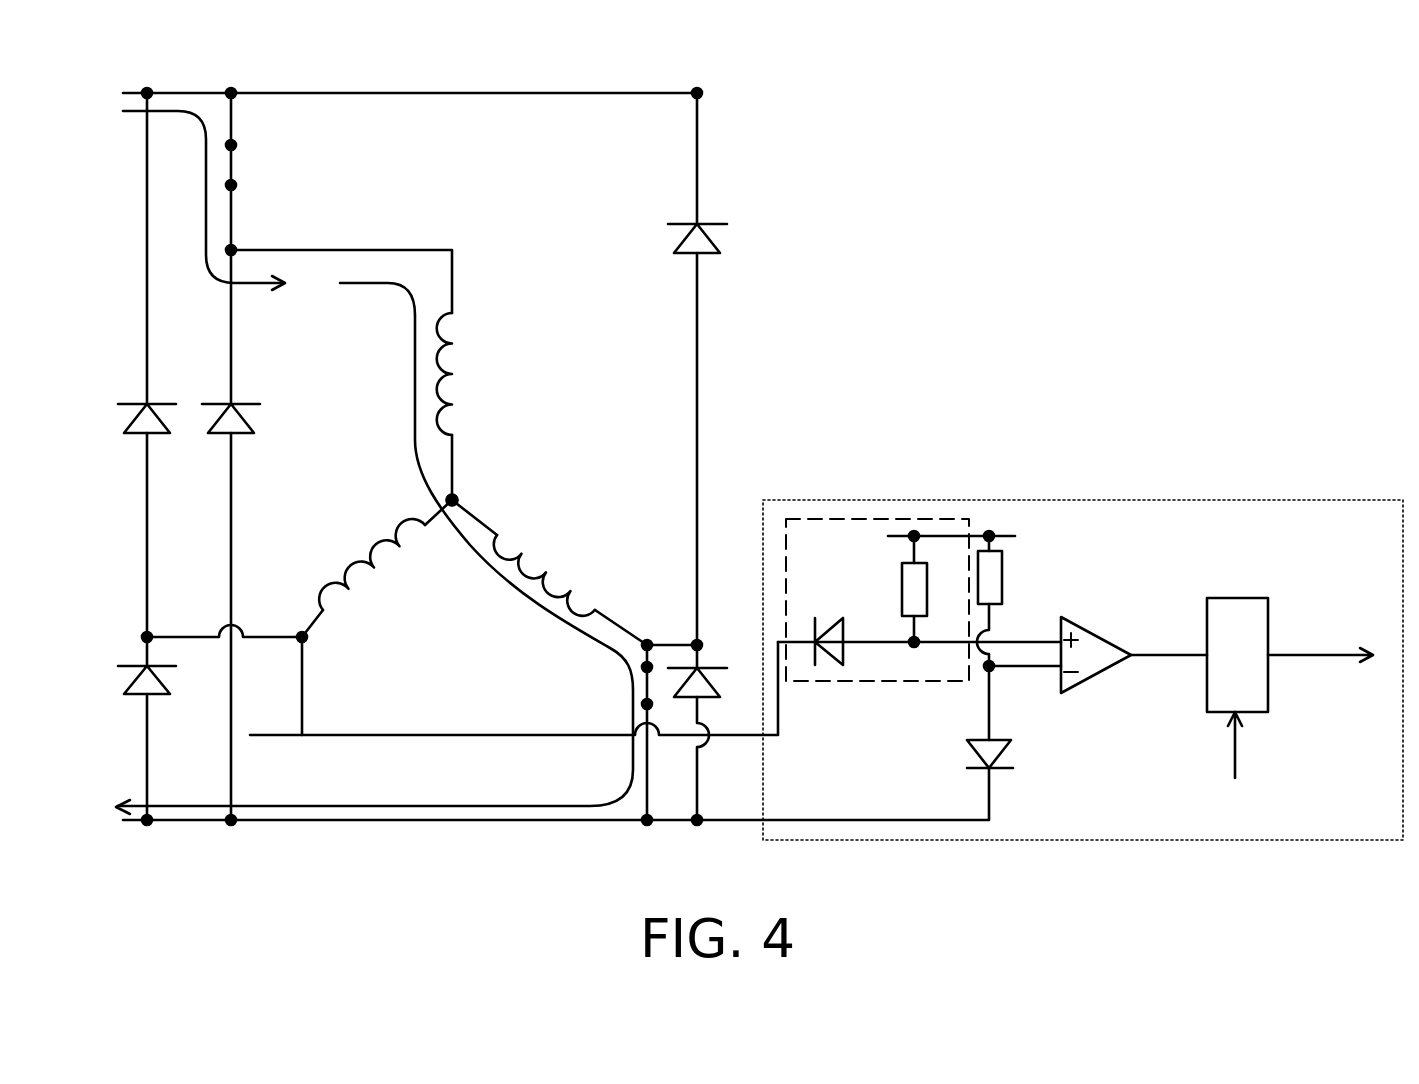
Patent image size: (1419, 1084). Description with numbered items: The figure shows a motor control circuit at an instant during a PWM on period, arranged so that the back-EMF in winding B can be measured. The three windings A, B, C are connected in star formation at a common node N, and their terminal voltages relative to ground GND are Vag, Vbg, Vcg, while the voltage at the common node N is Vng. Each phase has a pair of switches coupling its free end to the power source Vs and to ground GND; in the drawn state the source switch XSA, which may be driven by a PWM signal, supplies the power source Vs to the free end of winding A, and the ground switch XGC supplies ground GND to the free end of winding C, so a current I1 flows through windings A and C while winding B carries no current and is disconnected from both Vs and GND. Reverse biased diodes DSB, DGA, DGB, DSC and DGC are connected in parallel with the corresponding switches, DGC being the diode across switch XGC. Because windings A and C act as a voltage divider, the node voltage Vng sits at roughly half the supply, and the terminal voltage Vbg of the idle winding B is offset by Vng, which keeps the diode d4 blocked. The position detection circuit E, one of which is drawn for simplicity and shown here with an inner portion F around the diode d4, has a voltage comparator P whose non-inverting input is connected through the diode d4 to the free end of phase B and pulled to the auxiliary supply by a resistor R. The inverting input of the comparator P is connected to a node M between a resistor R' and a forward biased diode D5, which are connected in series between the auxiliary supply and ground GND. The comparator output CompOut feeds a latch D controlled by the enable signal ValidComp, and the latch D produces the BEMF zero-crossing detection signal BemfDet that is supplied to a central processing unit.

The power source Vs is at (434, 94).
The switch XSA is at (264, 174).
The reverse biased diode DSB is at (158, 365).
The reverse biased diode DGA is at (248, 535).
The reverse biased diode DGB is at (158, 728).
The reverse biased diode DSC is at (729, 369).
The reverse biased diode DGC is at (710, 717).
The switch XGC is at (610, 732).
The winding A is at (470, 374).
The winding B is at (377, 568).
The winding C is at (549, 572).
The common node N is at (401, 518).
The terminal voltage Vag is at (373, 281).
The node N voltage Vng is at (482, 476).
The terminal voltage Vbg is at (251, 680).
The terminal voltage Vcg is at (672, 625).
The current I1 is at (374, 462).
The position detection circuit E is at (947, 498).
The clamping circuit F is at (880, 683).
The diode d4 is at (919, 617).
The resistor R is at (926, 591).
The resistor R' is at (1007, 601).
The node M is at (992, 670).
The forward biased diode D5 is at (970, 724).
The voltage comparator P is at (1096, 642).
The output of the comparator CompOut is at (1175, 654).
The latch D is at (1237, 655).
The BEMF ZCP detection signal BemfDet is at (1326, 633).
The enable signal ValidComp is at (1243, 766).
The ground voltage GND is at (589, 802).